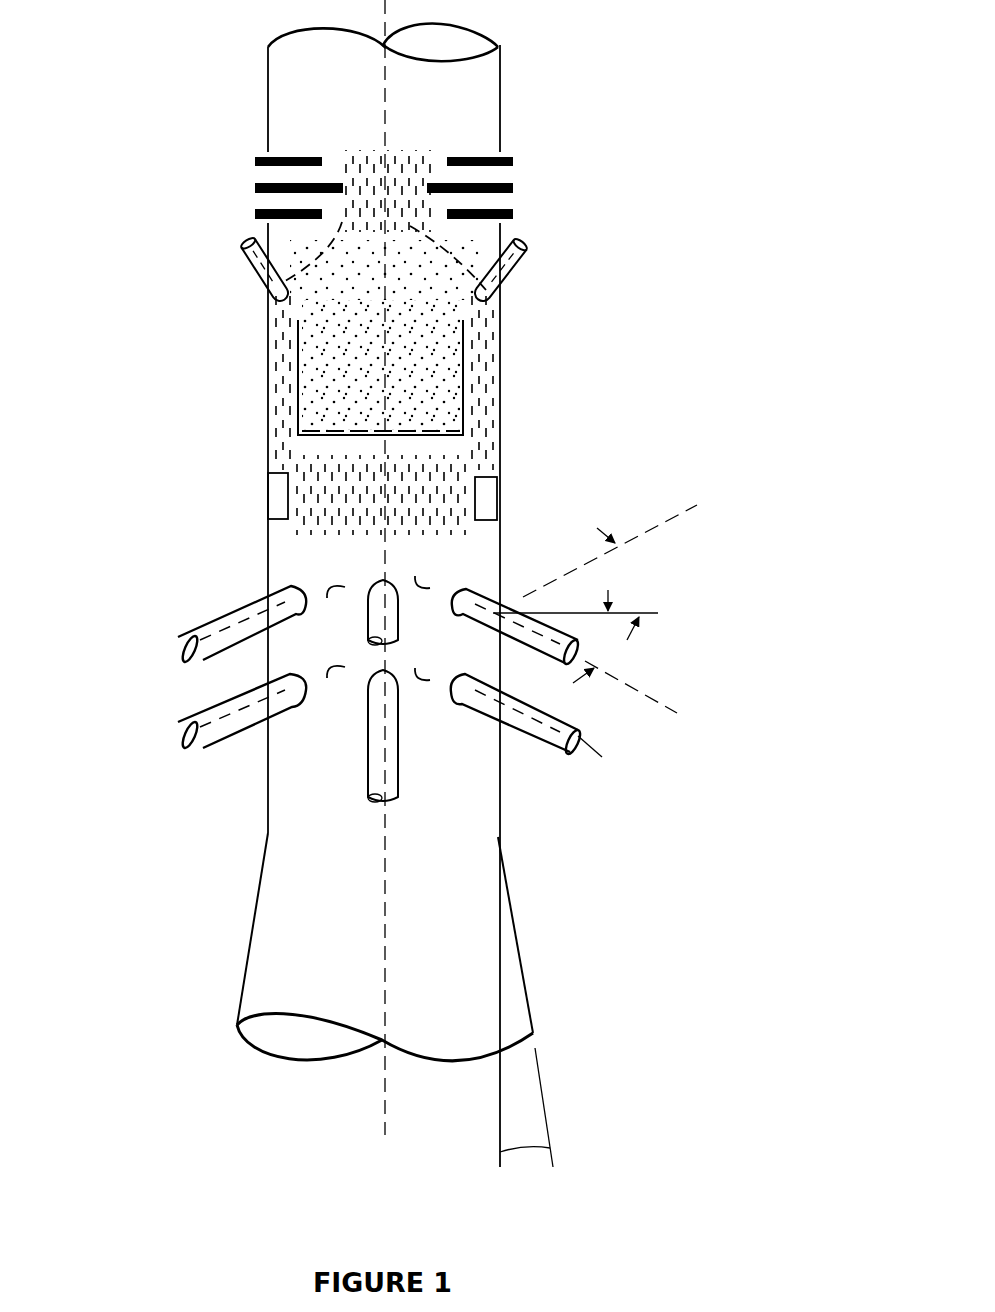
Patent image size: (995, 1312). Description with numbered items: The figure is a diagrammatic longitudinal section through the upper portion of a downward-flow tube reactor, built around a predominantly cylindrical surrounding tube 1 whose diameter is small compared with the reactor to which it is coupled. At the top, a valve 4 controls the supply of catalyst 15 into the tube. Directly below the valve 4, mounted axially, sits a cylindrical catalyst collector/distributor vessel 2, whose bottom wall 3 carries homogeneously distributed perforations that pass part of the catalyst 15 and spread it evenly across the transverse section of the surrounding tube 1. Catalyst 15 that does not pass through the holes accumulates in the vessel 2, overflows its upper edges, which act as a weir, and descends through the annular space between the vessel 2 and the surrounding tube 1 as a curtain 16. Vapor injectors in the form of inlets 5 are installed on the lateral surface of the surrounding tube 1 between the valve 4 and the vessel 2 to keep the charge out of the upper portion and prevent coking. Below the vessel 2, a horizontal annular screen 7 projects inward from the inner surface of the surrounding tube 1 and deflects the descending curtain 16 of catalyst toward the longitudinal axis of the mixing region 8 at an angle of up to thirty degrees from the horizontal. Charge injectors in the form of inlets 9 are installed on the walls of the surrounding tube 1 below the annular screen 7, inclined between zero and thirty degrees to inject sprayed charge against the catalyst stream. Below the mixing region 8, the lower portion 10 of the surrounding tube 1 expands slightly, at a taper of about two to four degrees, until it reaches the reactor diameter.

The surrounding tube 1 is at (505, 105).
The catalyst collector/distributor vessel 2 is at (463, 393).
The bottom wall 3 is at (468, 434).
The valve 4 is at (523, 192).
The inlets 5 is at (530, 238).
The annular screen 7 is at (488, 496).
The mixing region 8 is at (415, 560).
The inlets 9 is at (267, 598).
The lower portion 10 is at (528, 943).
The catalyst 15 is at (356, 345).
The curtain 16 is at (480, 347).